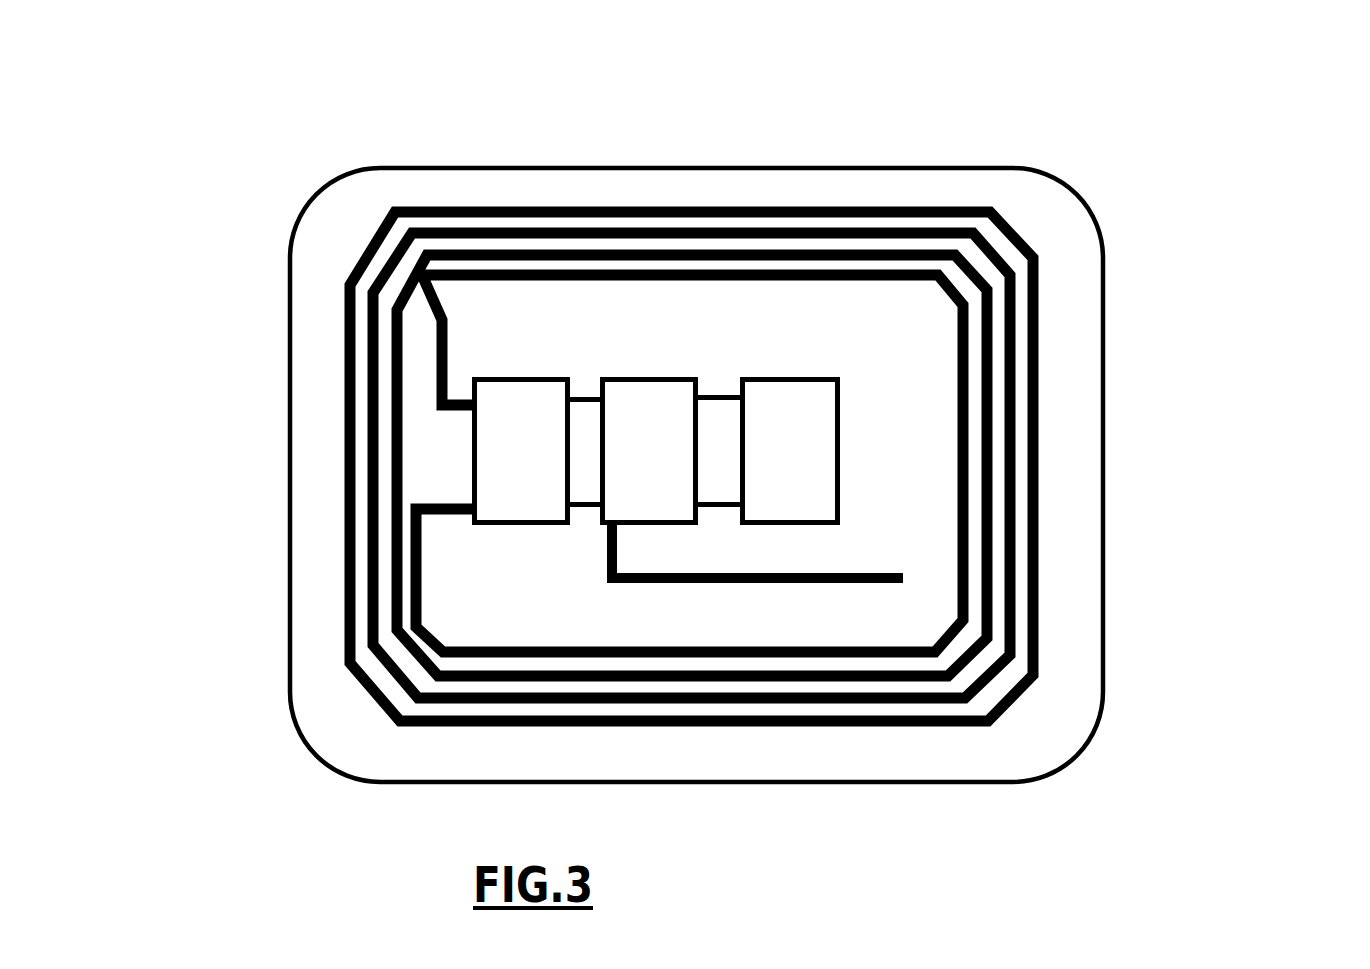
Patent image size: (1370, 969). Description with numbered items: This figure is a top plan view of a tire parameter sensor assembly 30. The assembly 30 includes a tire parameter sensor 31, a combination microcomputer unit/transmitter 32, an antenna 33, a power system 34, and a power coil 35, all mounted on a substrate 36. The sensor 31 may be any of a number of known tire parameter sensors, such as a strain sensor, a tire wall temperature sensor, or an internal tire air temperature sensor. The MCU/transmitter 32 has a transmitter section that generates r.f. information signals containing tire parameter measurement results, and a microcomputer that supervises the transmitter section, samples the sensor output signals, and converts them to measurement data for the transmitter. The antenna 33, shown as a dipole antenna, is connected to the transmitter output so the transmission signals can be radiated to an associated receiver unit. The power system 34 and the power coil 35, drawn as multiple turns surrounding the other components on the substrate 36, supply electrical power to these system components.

The tire parameter sensor assembly 30 is at (1108, 228).
The tire parameter sensor 31 is at (778, 450).
The microcomputer unit/transmitter 32 is at (643, 450).
The antenna 33 is at (602, 568).
The power system 34 is at (513, 425).
The power coil 35 is at (1017, 535).
The substrate 36 is at (1078, 382).